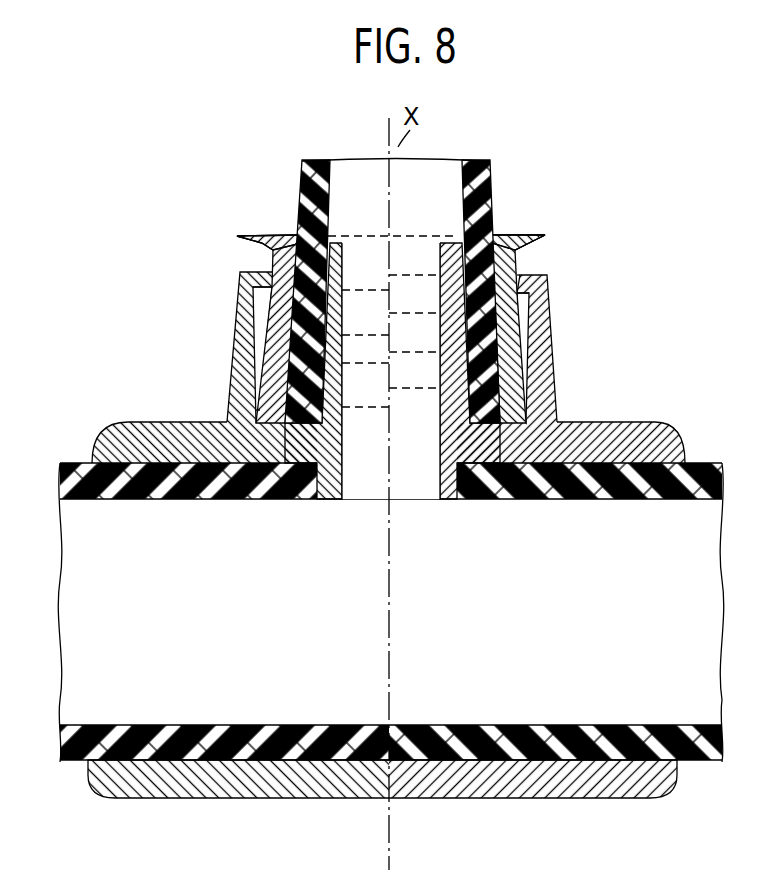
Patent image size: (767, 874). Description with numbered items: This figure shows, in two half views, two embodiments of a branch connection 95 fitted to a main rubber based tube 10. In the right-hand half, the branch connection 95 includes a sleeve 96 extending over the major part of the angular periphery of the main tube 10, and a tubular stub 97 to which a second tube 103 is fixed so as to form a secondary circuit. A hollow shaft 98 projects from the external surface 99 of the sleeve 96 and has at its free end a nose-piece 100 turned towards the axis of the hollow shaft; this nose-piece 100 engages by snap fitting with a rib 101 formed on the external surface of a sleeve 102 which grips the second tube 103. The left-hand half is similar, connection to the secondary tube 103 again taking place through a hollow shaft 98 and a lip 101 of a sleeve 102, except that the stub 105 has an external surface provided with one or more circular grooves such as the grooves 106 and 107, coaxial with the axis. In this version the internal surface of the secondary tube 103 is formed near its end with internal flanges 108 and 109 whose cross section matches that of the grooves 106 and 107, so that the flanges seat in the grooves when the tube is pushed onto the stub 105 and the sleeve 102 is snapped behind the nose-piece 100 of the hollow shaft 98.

The main rubber based tube 10 is at (702, 482).
The branch connection 95 is at (388, 308).
The sleeve 96 is at (298, 783).
The tubular stub 97 is at (440, 445).
The hollow shaft 98 is at (230, 355).
The external surface 99 is at (585, 422).
The nose-piece 100 is at (520, 277).
The rib 101 is at (260, 300).
The sleeve 102 is at (265, 233).
The second tube 103 is at (303, 178).
The stub 105 is at (342, 440).
The circular groove 106 is at (345, 293).
The circular groove 107 is at (343, 385).
The internal flange 108 is at (268, 322).
The internal flange 109 is at (258, 388).